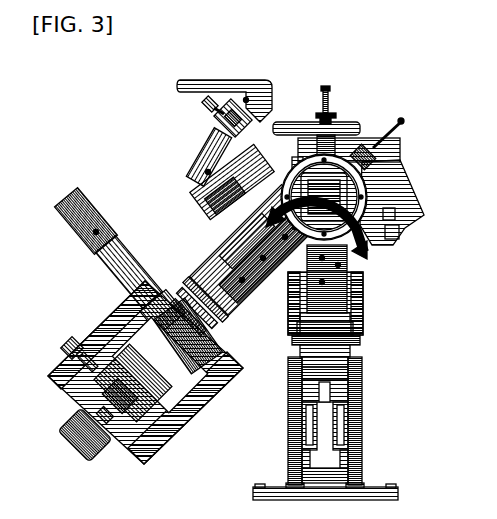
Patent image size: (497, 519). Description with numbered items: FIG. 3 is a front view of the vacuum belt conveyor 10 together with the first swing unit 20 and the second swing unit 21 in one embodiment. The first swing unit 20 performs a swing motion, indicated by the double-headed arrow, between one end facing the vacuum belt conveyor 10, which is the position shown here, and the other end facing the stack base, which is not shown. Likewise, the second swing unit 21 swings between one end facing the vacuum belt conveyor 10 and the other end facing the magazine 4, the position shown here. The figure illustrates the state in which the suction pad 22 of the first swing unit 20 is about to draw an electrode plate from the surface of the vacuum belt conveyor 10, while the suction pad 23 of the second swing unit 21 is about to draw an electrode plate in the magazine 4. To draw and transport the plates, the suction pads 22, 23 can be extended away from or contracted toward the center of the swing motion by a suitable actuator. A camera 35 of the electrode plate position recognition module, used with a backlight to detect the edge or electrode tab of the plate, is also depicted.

The magazine 4 is at (370, 397).
The vacuum belt conveyor 10 is at (164, 347).
The first swing unit 20 is at (201, 257).
The second swing unit 21 is at (376, 313).
The suction pad 22 is at (197, 326).
The suction pad 23 is at (311, 372).
The camera 35 is at (204, 217).